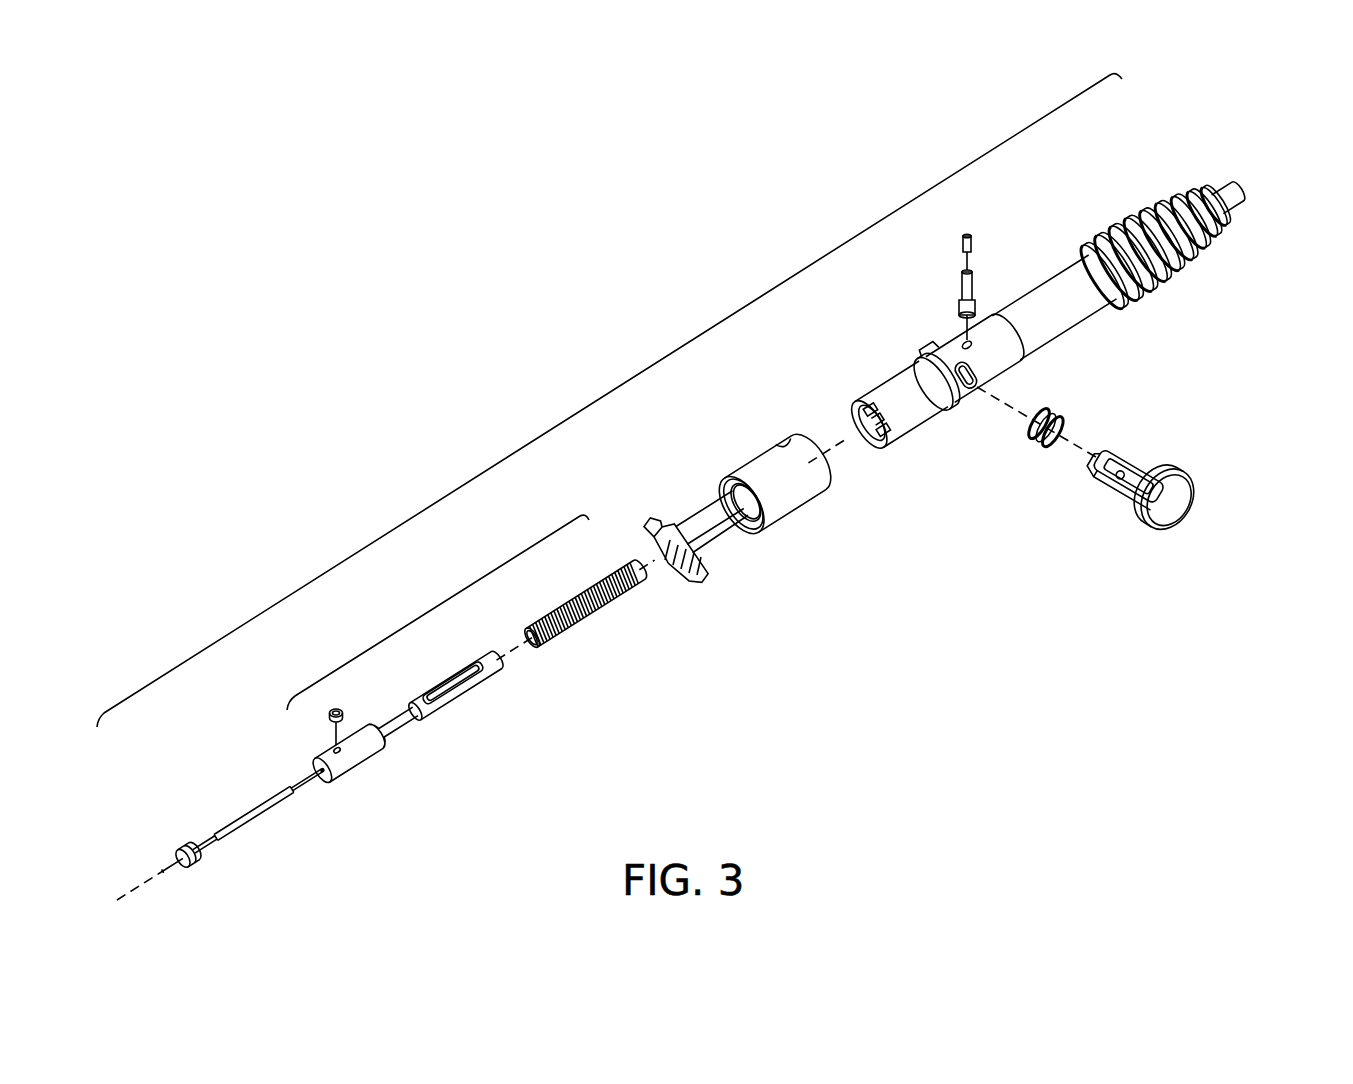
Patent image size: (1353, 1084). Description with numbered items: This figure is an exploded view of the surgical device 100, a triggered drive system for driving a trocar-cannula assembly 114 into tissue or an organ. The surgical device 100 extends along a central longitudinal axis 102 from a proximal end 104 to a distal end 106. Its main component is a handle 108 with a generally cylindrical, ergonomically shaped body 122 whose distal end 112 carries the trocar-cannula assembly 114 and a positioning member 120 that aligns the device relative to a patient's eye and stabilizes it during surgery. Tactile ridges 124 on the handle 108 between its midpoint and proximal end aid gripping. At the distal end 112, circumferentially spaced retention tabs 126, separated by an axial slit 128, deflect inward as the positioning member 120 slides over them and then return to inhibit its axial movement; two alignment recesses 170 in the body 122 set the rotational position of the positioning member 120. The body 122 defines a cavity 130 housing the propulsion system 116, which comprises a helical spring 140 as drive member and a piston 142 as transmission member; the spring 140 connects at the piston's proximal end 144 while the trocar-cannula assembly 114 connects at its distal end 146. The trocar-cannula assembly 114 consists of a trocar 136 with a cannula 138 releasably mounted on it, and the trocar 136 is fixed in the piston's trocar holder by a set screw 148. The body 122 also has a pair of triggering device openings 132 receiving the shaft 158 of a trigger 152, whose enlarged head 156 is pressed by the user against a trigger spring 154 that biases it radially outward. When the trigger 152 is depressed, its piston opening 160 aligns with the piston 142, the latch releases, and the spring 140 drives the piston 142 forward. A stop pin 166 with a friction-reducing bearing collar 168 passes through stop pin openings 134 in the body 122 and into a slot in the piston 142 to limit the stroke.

The surgical device 100 is at (603, 404).
The central longitudinal axis 102 is at (706, 555).
The proximal end 104 is at (1237, 182).
The distal end 106 is at (700, 575).
The handle 108 is at (1036, 303).
The distal end of the handle 112 is at (872, 442).
The trocar-cannula assembly 114 is at (232, 833).
The propulsion system 116 is at (450, 608).
The positioning member 120 is at (748, 440).
The body 122 is at (1092, 315).
The tactile ridges 124 is at (1162, 214).
The retention tabs 126 is at (853, 406).
The slit 128 is at (885, 432).
The cavity 130 is at (860, 446).
The triggering device openings 132 is at (982, 388).
The stop pin openings 134 is at (993, 332).
The trocar 136 is at (270, 834).
The cannula 138 is at (212, 877).
The helical spring 140 is at (602, 607).
The piston 142 is at (420, 745).
The proximal end of the piston 144 is at (487, 655).
The distal end of the piston 146 is at (317, 763).
The set screw 148 is at (345, 713).
The trigger 152 is at (1193, 514).
The trigger spring 154 is at (1036, 446).
The head 156 is at (1158, 530).
The shaft 158 is at (1120, 462).
The piston opening 160 is at (1126, 488).
The stop pin 166 is at (940, 261).
The bearing collar 168 is at (973, 240).
The alignment recesses 170 is at (926, 352).